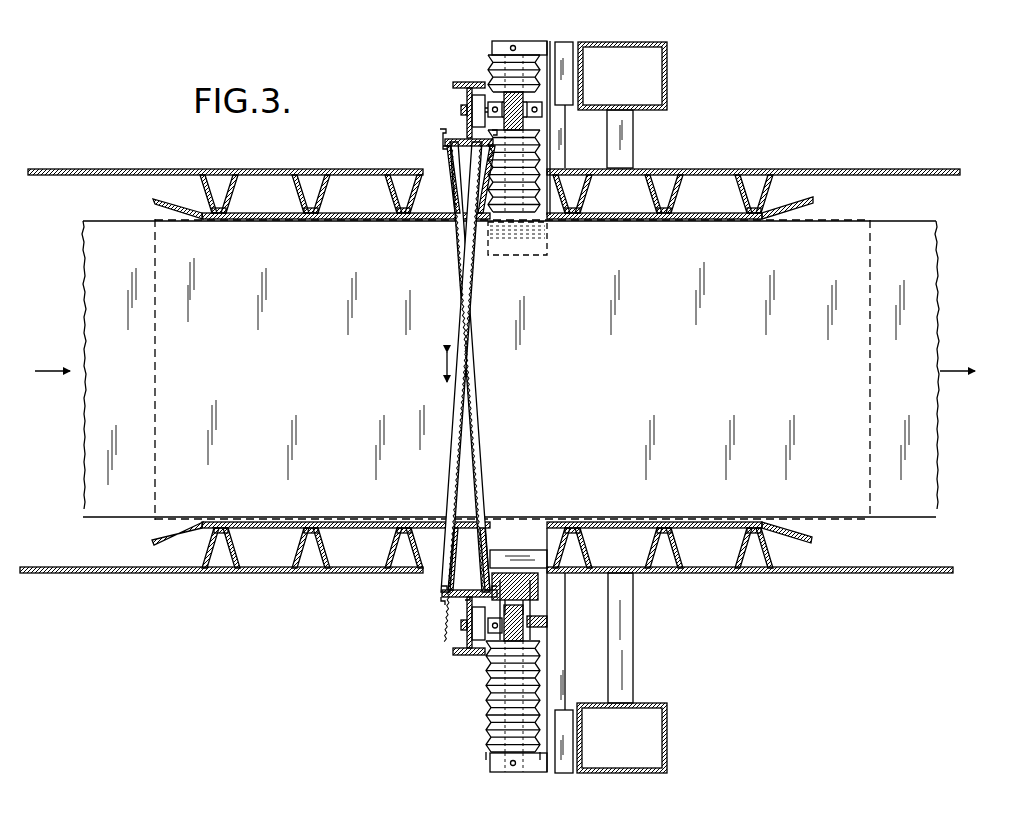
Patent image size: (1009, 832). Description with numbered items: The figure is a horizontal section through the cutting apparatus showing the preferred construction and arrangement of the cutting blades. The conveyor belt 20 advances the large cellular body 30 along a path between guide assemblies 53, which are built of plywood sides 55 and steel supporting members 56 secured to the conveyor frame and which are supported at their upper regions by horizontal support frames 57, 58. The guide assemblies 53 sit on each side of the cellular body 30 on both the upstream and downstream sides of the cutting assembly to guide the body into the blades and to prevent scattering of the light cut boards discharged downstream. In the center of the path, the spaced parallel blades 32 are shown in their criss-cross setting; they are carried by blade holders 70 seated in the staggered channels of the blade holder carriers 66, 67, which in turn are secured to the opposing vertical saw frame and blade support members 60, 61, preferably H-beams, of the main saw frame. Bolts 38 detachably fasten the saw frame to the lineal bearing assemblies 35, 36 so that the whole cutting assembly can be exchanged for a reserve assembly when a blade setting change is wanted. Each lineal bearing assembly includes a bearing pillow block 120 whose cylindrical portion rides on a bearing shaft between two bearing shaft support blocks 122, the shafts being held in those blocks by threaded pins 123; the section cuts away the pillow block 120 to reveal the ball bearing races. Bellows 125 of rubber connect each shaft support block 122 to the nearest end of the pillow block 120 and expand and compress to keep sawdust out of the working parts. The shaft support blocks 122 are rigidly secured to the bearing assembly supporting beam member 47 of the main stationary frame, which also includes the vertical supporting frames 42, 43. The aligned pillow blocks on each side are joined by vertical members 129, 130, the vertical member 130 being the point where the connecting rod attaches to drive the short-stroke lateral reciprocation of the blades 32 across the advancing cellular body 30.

The conveyor belt 20 is at (83, 288).
The cellular body 30 is at (155, 385).
The blades 32 is at (453, 268).
The lineal bearing assembly 35 is at (486, 738).
The lineal bearing assembly 36 is at (491, 43).
The bolts 38 is at (461, 109).
The vertical supporting frame 42 is at (668, 732).
The vertical supporting frame 43 is at (668, 76).
The bearing assembly supporting beam member 47 is at (564, 139).
The guide assemblies 53 is at (112, 168).
The plywood sides 55 is at (257, 168).
The steel supporting members 56 is at (205, 189).
The horizontal support frame 57 is at (633, 642).
The horizontal support frame 58 is at (633, 139).
The vertical saw frame and blade support member 60 is at (460, 656).
The vertical saw frame and blade support member 61 is at (453, 84).
The blade holder carrier 66 is at (467, 585).
The blade holder carrier 67 is at (469, 147).
The blade holders 70 is at (444, 143).
The bearing pillow block 120 is at (504, 766).
The bearing shaft support blocks 122 is at (511, 257).
The threaded pins 123 is at (512, 768).
The bellows 125 is at (486, 714).
The vertical member 129 is at (500, 76).
The vertical member 130 is at (540, 638).